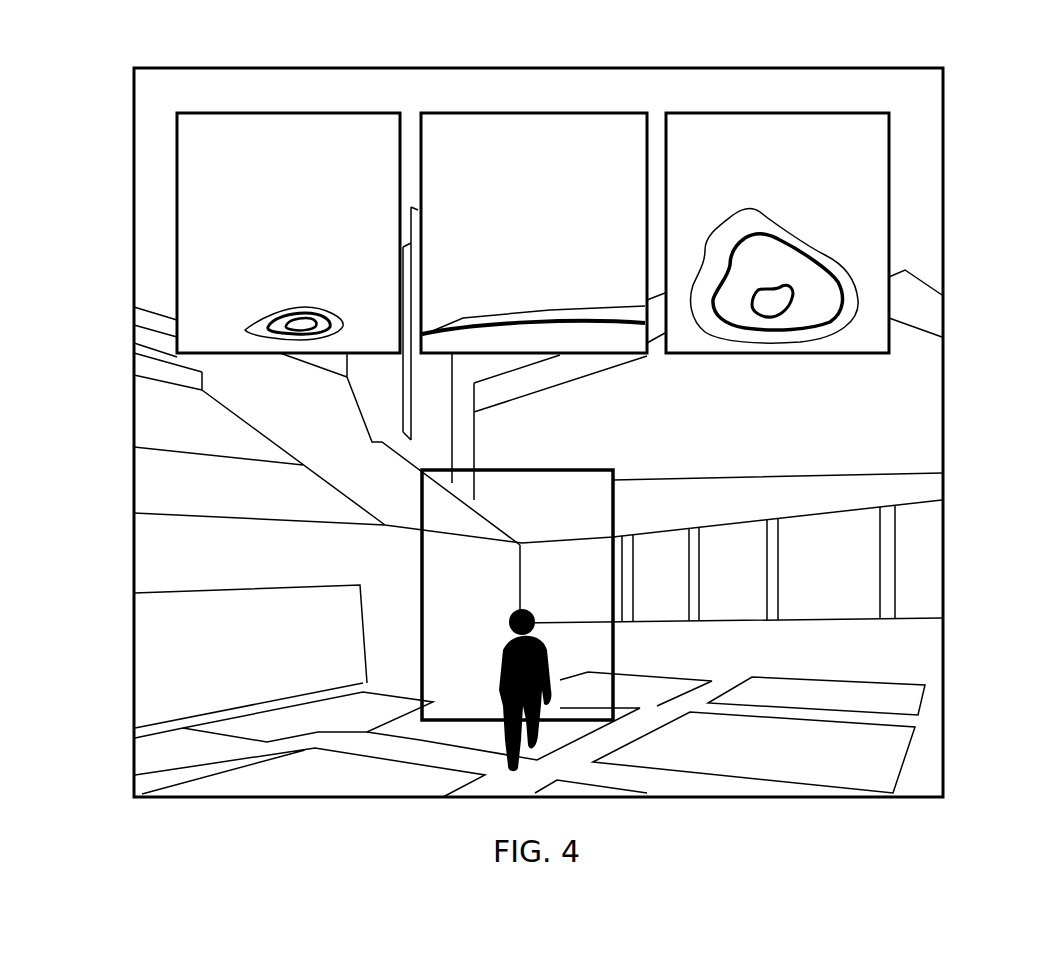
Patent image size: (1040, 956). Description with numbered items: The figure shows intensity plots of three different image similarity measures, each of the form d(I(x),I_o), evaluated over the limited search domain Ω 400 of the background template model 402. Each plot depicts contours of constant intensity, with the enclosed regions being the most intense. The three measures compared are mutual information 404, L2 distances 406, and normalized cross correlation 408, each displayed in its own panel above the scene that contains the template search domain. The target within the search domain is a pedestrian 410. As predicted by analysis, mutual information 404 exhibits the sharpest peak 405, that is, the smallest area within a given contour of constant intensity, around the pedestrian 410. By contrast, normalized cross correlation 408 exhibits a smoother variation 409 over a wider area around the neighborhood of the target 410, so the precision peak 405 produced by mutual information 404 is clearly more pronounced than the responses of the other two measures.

The limited search domain Ω 400 is at (942, 473).
The background template model 402 is at (134, 565).
The mutual information 404 is at (177, 217).
The sharpest peak 405 is at (257, 320).
The L2 distances 406 is at (437, 113).
The normalized cross correlation 408 is at (892, 203).
The smoother variation 409 is at (464, 330).
The pedestrian 410 is at (512, 760).